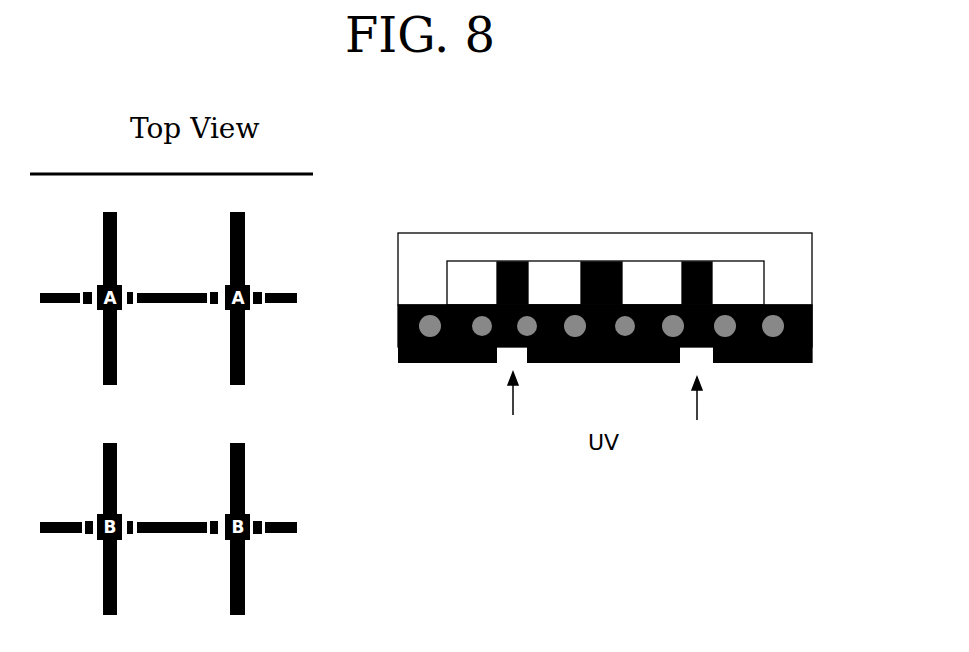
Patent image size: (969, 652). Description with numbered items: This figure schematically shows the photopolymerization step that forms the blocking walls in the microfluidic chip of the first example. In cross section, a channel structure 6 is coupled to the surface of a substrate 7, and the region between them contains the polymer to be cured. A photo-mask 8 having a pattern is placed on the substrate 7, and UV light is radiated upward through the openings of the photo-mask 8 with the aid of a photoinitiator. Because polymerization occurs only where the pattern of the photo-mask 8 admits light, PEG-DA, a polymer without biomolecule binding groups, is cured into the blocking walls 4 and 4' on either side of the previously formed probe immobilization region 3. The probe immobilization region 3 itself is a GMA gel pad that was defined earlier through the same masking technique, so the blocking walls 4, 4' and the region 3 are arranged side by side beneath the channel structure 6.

The probe immobilization region 3 is at (604, 275).
The blocking wall 4 is at (534, 229).
The blocking wall 4' is at (721, 229).
The channel structure 6 is at (793, 272).
The substrate 7 is at (793, 325).
The photo-mask 8 is at (818, 358).